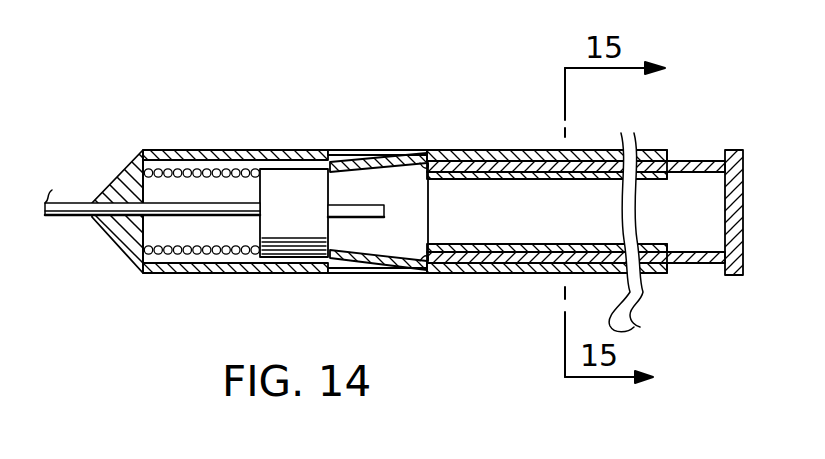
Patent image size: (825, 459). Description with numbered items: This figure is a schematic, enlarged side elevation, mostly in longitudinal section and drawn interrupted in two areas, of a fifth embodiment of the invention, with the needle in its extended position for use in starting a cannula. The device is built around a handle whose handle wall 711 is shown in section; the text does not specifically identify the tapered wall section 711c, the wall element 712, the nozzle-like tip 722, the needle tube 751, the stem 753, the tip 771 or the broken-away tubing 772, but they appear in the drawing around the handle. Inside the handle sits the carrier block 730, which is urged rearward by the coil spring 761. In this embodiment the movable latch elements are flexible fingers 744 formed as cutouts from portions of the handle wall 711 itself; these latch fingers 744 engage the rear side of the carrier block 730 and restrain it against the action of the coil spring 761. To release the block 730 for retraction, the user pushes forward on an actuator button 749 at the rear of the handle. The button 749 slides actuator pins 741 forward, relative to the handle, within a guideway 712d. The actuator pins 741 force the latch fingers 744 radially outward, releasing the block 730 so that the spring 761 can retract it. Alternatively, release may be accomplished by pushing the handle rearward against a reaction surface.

The handle wall 711 is at (240, 150).
The tapered conical section of barrel 711c is at (350, 160).
The plunger body 712 is at (174, 160).
The guideway 712d is at (670, 248).
The nozzle 722 is at (108, 168).
The carrier block 730 is at (290, 228).
The actuator pins 741 is at (468, 161).
The flexible fingers 744 is at (336, 173).
The actuator button 749 is at (748, 170).
The needle tube 751 is at (190, 203).
The piston rod 753 is at (386, 214).
The coil spring 761 is at (164, 249).
The needle tip 771 is at (45, 217).
The flexible tubing 772 is at (642, 237).